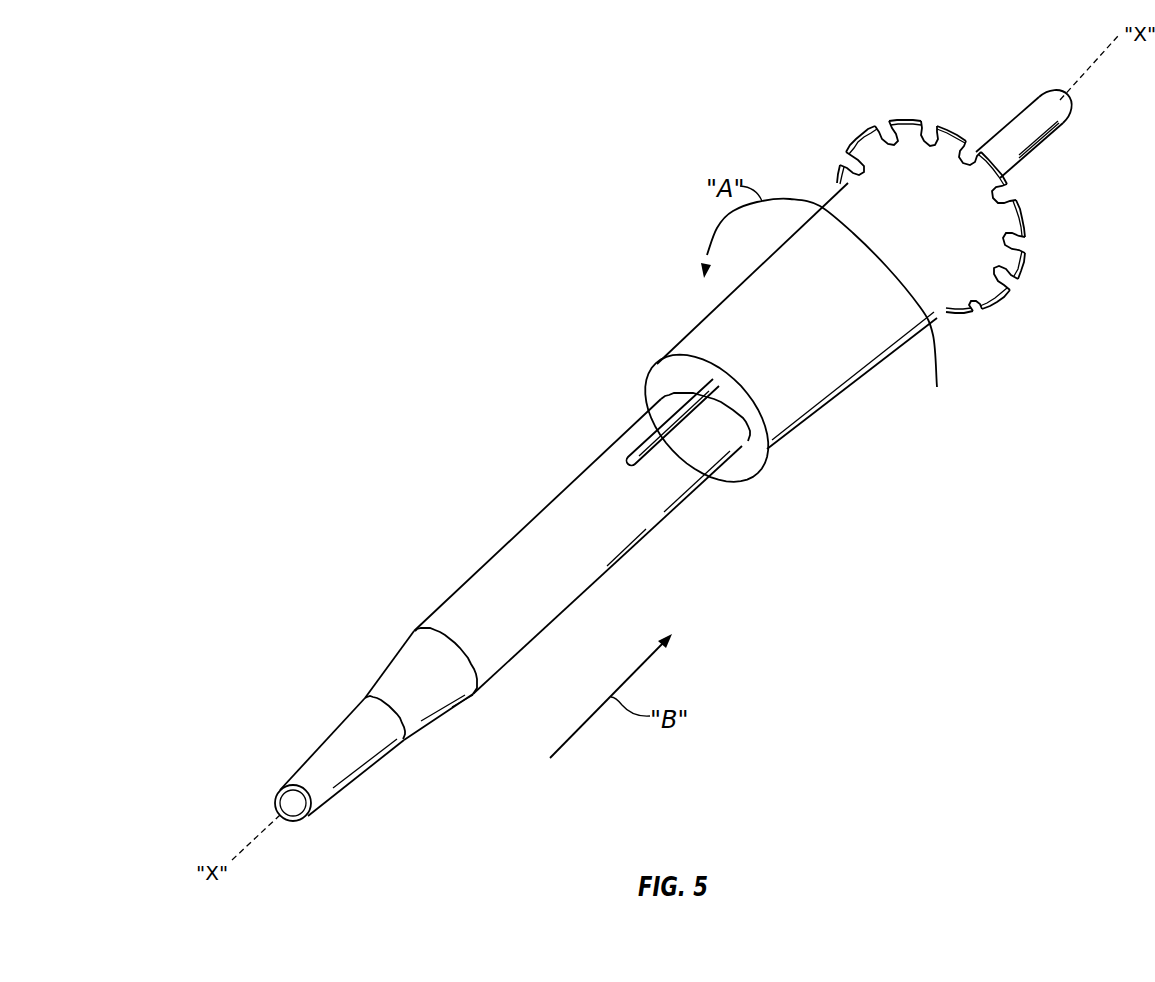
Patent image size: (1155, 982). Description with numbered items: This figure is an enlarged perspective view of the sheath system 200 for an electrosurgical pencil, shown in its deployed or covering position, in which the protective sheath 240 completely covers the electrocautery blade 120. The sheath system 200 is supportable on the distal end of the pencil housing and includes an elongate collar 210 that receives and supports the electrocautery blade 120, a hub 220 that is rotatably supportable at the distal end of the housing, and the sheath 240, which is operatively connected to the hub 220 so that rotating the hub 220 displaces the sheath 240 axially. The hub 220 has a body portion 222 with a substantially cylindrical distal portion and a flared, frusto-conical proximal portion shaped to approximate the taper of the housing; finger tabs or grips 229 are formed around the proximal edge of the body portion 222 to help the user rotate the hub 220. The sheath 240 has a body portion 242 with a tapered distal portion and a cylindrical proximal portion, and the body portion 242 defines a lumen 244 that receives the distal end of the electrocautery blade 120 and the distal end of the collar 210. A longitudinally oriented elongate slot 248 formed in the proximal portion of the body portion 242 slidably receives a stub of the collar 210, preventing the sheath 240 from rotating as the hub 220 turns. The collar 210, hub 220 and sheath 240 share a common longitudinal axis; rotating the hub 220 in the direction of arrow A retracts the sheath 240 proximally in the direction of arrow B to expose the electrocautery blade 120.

The sheath system 200 is at (495, 266).
The electrocautery blade 120 is at (1033, 160).
The elongate collar 210 is at (657, 432).
The hub 220 is at (725, 319).
The body portion 222 is at (786, 416).
The finger tabs or grips 229 is at (1024, 268).
The protective sheath 240 is at (456, 597).
The body portion 242 is at (528, 632).
The lumen 244 is at (283, 797).
The elongate slot 248 is at (653, 450).